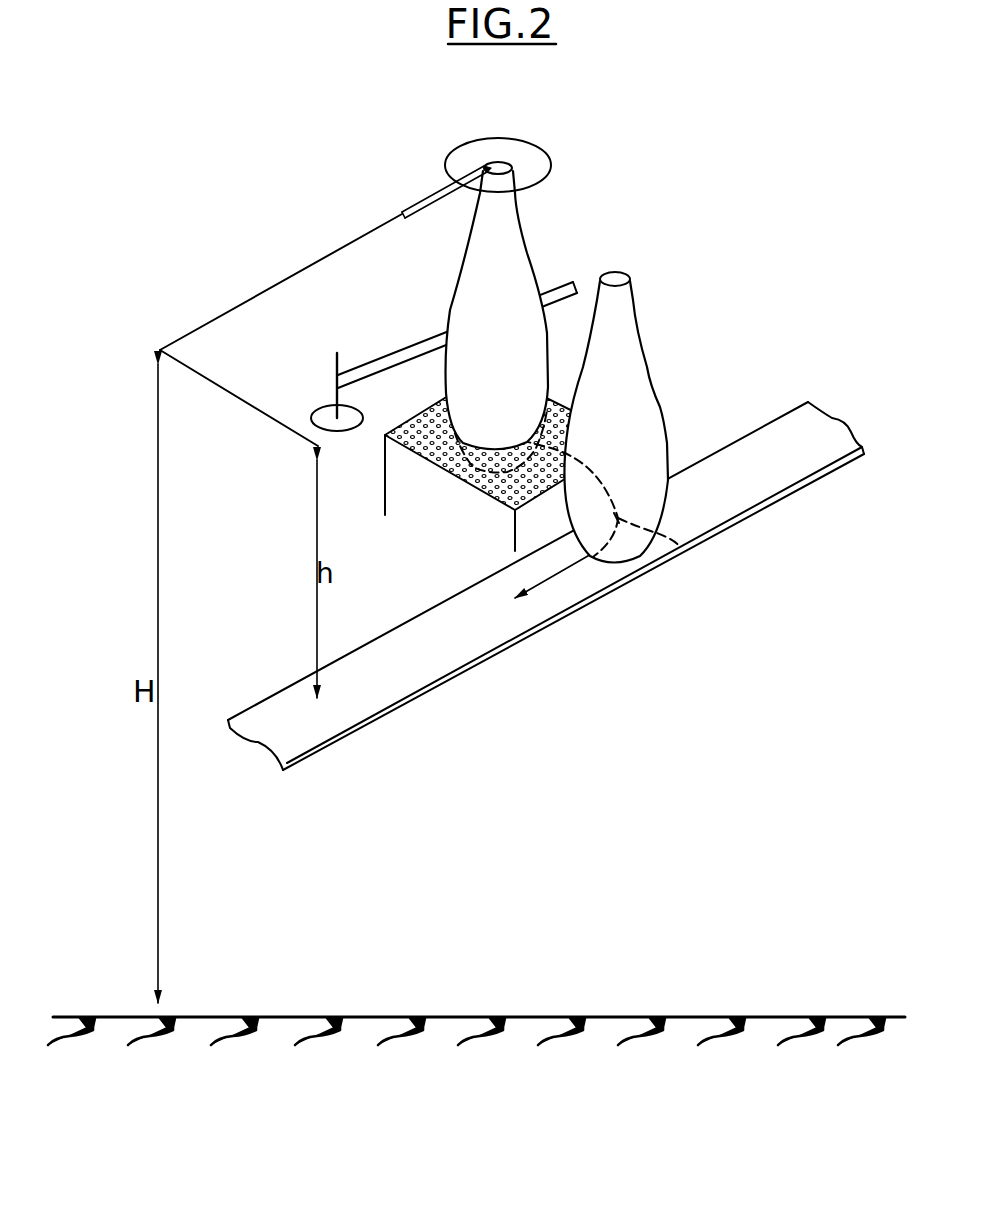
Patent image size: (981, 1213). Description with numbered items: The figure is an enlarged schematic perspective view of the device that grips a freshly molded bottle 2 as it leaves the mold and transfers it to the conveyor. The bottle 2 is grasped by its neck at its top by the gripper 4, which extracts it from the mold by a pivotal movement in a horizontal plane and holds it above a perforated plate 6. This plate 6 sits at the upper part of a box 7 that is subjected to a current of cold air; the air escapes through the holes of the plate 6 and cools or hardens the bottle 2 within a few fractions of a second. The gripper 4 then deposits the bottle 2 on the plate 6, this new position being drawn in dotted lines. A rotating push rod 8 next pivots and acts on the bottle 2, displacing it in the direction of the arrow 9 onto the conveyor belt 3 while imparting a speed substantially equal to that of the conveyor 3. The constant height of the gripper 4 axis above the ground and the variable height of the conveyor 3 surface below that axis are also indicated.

The molded bottle 2 is at (497, 258).
The conveyor belt 3 is at (755, 475).
The gripper 4 is at (430, 200).
The perforated plate 6 is at (445, 455).
The box 7 is at (480, 512).
The rotating push rod 8 is at (403, 355).
The arrow 9 is at (680, 547).